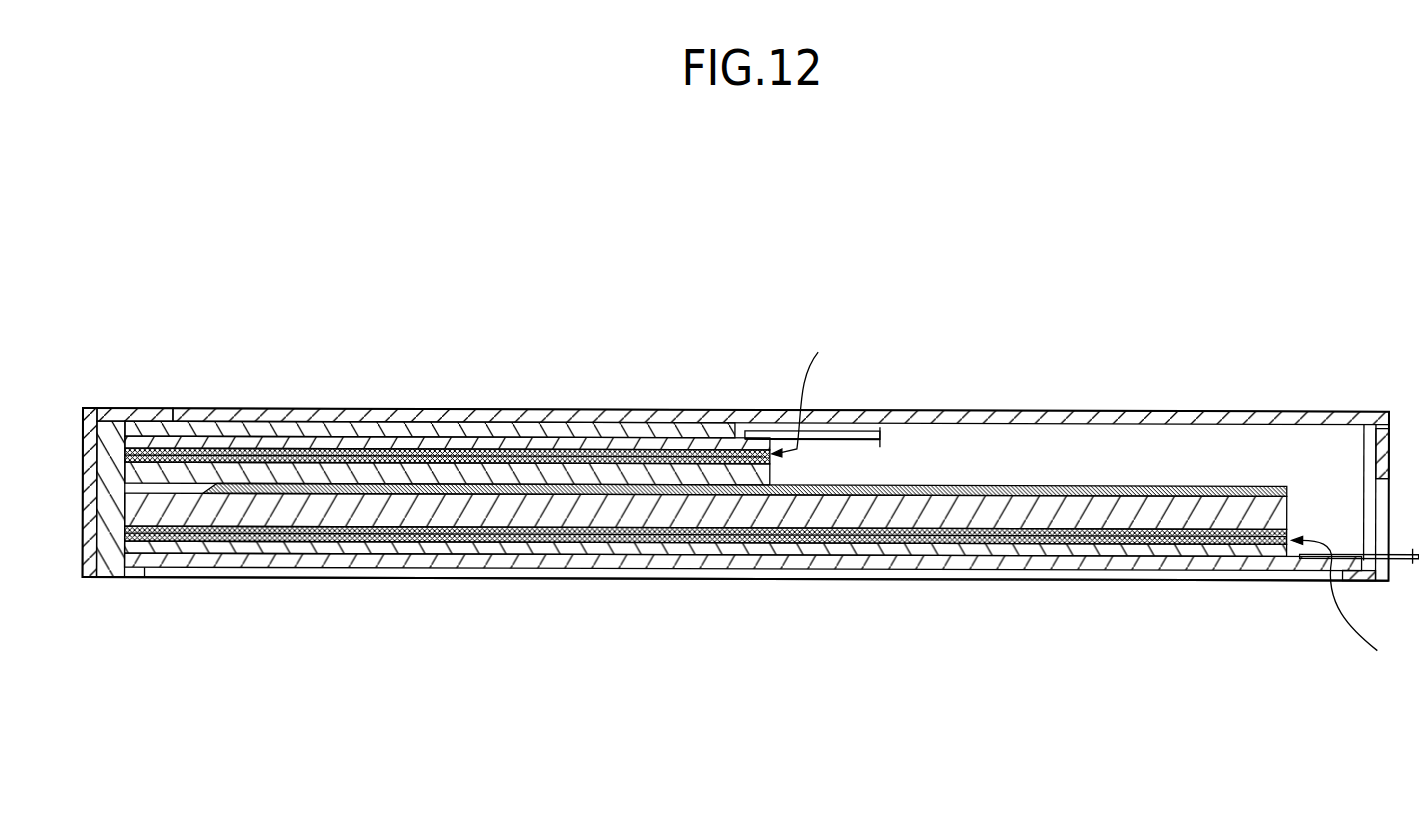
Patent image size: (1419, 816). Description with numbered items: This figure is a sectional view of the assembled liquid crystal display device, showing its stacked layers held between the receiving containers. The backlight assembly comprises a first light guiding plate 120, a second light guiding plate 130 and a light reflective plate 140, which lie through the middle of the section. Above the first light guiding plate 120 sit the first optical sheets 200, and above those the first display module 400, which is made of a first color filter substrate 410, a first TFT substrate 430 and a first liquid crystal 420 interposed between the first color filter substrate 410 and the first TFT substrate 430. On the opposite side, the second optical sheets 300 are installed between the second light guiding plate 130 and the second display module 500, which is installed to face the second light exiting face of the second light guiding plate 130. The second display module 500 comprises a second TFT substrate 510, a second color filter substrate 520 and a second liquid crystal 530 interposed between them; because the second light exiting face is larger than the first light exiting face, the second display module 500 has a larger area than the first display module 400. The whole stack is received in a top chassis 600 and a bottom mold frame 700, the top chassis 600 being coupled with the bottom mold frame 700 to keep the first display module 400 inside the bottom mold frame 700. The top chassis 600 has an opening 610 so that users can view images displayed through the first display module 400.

The first light guiding plate 120 is at (773, 473).
The second light guiding plate 130 is at (1282, 500).
The light reflective plate 140 is at (1137, 485).
The first optical sheets 200 is at (820, 392).
The second optical sheets 300 is at (1354, 604).
The first display module 400 is at (448, 376).
The first color filter substrate 410 is at (405, 425).
The first liquid crystal 420 is at (483, 438).
The first TFT substrate 430 is at (413, 318).
The second display module 500 is at (743, 627).
The second TFT substrate 510 is at (392, 545).
The second color filter substrate 520 is at (408, 672).
The second liquid crystal 530 is at (322, 547).
The top chassis 600 is at (118, 412).
The opening 610 is at (186, 410).
The bottom mold frame 700 is at (116, 572).